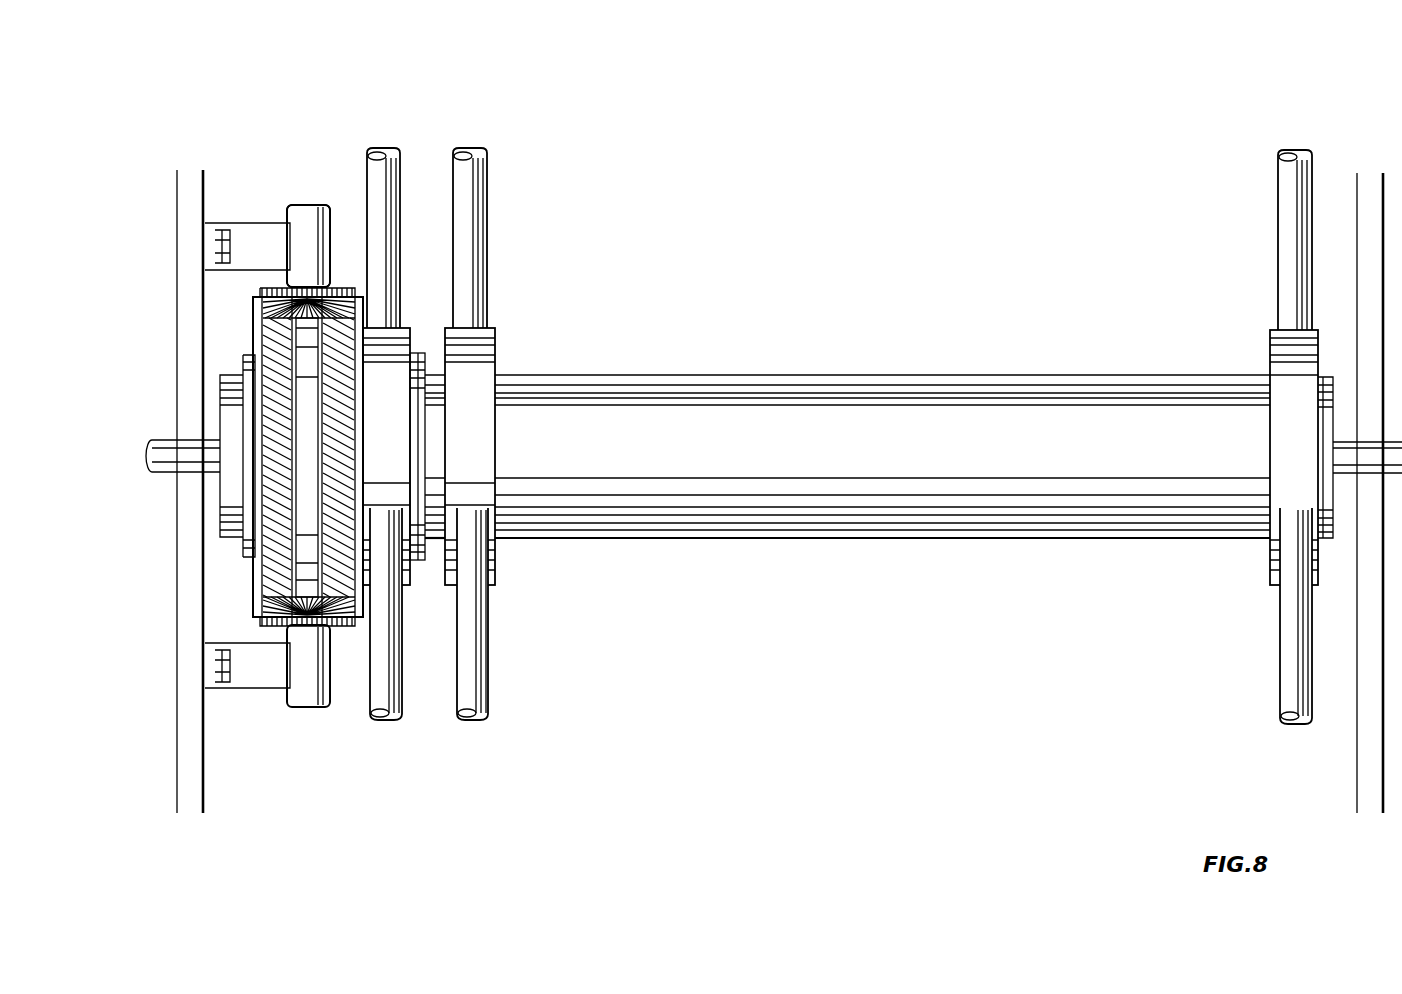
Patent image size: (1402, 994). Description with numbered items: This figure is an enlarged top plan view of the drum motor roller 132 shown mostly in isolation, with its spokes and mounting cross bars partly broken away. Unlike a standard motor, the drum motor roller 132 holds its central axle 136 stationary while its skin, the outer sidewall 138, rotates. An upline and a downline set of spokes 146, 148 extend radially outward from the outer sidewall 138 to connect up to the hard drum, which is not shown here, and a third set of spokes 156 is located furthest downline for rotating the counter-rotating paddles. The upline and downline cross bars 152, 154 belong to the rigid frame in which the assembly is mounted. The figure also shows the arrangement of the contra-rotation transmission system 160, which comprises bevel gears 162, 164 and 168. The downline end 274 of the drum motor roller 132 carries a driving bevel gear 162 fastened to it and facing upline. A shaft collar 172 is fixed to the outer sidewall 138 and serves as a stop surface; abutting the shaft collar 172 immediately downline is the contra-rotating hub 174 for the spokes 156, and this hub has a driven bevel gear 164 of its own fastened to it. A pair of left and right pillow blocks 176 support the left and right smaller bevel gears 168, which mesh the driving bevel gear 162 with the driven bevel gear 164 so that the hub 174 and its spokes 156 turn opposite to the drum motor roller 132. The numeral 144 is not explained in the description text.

The drum motor roller 132 is at (1085, 318).
The central axle 136 is at (163, 448).
The outer sidewall 138 is at (1125, 387).
The bearing 144 is at (305, 172).
The upline set of spokes 146 is at (1288, 193).
The downline set of spokes 148 is at (467, 193).
The upline cross bar 152 is at (1383, 196).
The downline cross bar 154 is at (175, 197).
The third set of spokes 156 is at (375, 167).
The contra-rotation transmission system 160 is at (308, 246).
The driving bevel gear 162 is at (272, 348).
The driven bevel gear 164 is at (258, 357).
The smaller bevel gears 168 is at (287, 290).
The shaft collar 172 is at (418, 357).
The contra-rotating hub 174 is at (400, 338).
The pillow blocks 176 is at (305, 218).
The downline end 274 is at (237, 512).